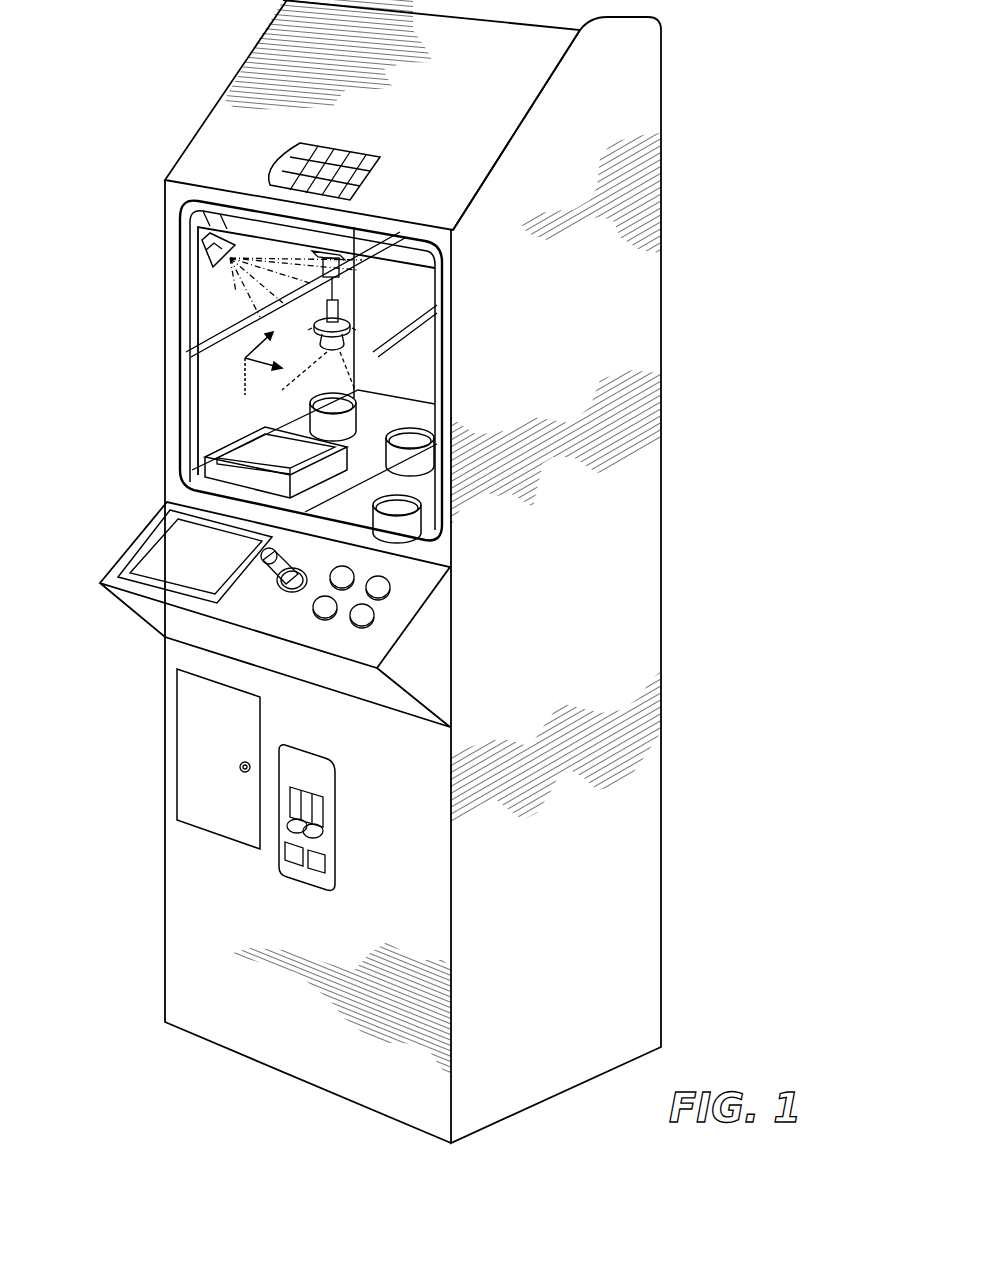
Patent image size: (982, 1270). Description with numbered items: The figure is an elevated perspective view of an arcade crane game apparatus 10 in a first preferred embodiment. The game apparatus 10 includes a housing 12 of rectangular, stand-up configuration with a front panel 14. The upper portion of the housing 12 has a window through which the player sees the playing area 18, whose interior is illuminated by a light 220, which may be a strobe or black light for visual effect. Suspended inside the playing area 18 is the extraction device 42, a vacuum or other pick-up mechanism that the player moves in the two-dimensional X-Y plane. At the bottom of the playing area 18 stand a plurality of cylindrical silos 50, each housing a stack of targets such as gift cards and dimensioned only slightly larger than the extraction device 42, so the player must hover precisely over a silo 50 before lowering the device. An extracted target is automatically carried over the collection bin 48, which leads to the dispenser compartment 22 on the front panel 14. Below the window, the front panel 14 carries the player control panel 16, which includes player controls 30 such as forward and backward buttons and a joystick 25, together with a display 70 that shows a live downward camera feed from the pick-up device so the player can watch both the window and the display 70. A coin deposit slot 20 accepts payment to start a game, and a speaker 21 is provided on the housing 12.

The game apparatus 10 is at (436, 571).
The housing 12 is at (625, 852).
The front panel 14 is at (190, 893).
The player control panel 16 is at (249, 614).
The playing area 18 is at (428, 525).
The coin deposit slot 20 is at (310, 770).
The speaker 21 is at (357, 178).
The dispenser compartment 22 is at (230, 705).
The joystick 25 is at (272, 573).
The player controls 30 is at (373, 627).
The extraction device 42 is at (343, 315).
The collection bin 48 is at (242, 468).
The silos 50 is at (352, 422).
The display 70 is at (162, 558).
The light 220 is at (212, 252).